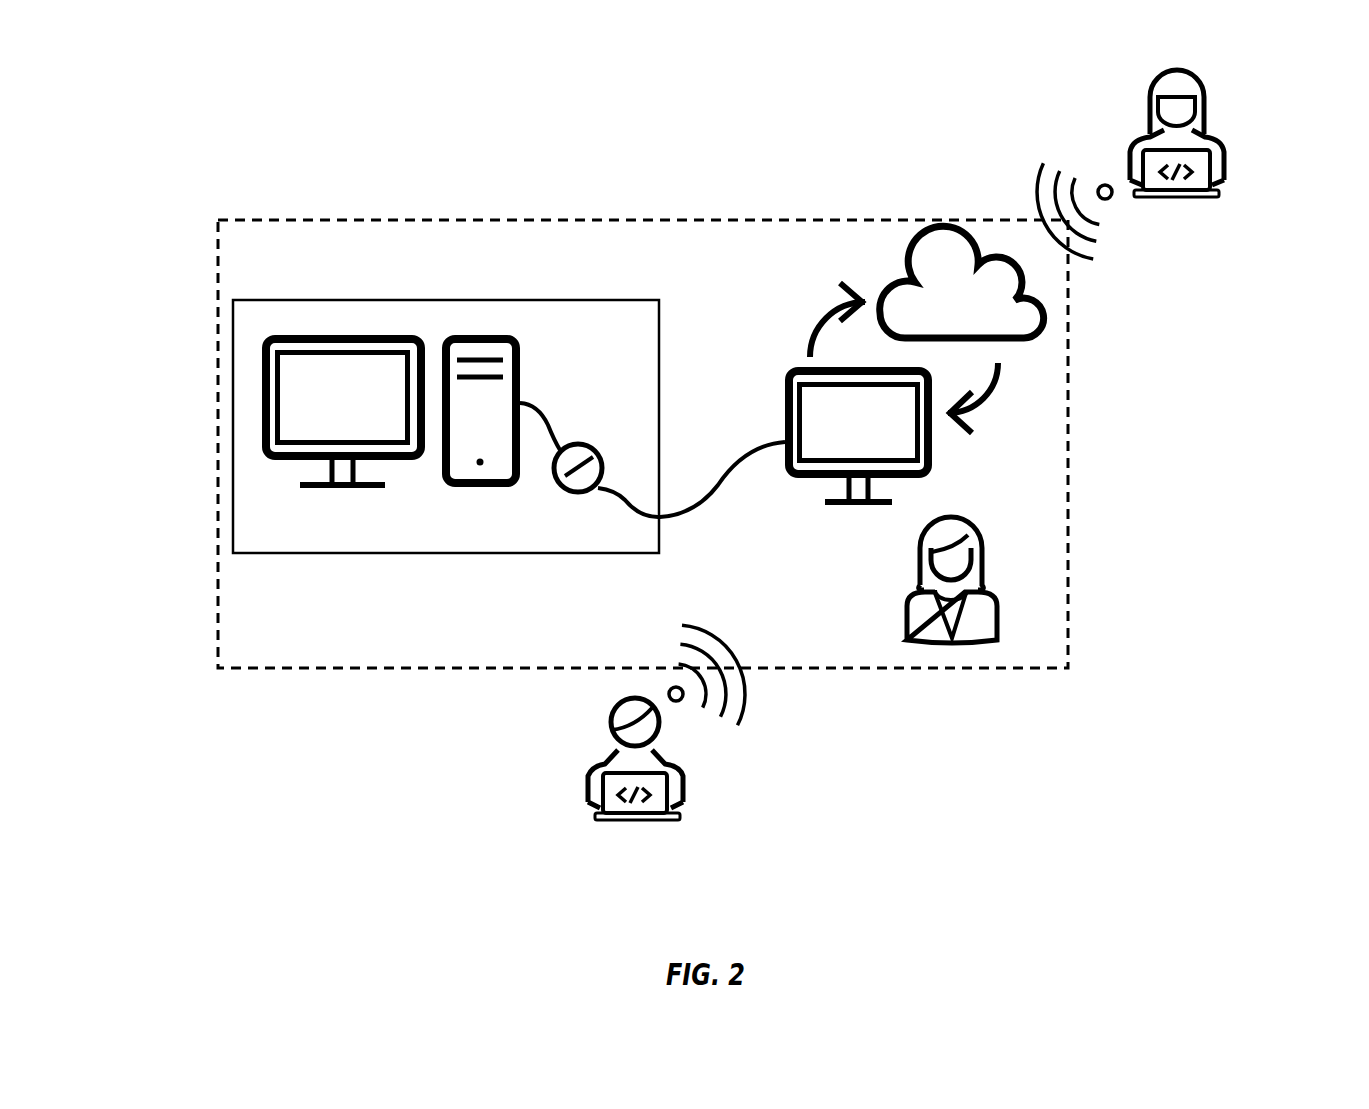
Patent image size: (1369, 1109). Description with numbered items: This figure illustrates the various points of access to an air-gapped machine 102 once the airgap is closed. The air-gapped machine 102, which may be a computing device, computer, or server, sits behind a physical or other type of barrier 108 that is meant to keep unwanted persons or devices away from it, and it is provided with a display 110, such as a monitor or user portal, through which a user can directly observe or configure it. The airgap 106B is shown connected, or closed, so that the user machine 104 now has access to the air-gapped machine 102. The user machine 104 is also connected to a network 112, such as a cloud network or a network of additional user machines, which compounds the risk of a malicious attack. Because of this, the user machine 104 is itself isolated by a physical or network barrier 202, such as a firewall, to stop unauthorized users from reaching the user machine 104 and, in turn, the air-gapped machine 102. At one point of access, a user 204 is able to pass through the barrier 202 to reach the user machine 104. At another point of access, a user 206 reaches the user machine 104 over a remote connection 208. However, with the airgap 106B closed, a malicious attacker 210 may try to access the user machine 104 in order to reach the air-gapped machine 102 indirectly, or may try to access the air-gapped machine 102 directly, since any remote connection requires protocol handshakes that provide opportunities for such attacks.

The air-gapped machine 102 is at (518, 355).
The user machine 104 is at (785, 382).
The airgap 106B is at (603, 450).
The barrier 108 is at (233, 350).
The display 110 is at (262, 413).
The network 112 is at (1043, 315).
The barrier 202 is at (218, 262).
The user 204 is at (960, 530).
The user 206 is at (1203, 93).
The remote connection 208 is at (1040, 185).
The malicious attacker 210 is at (614, 710).